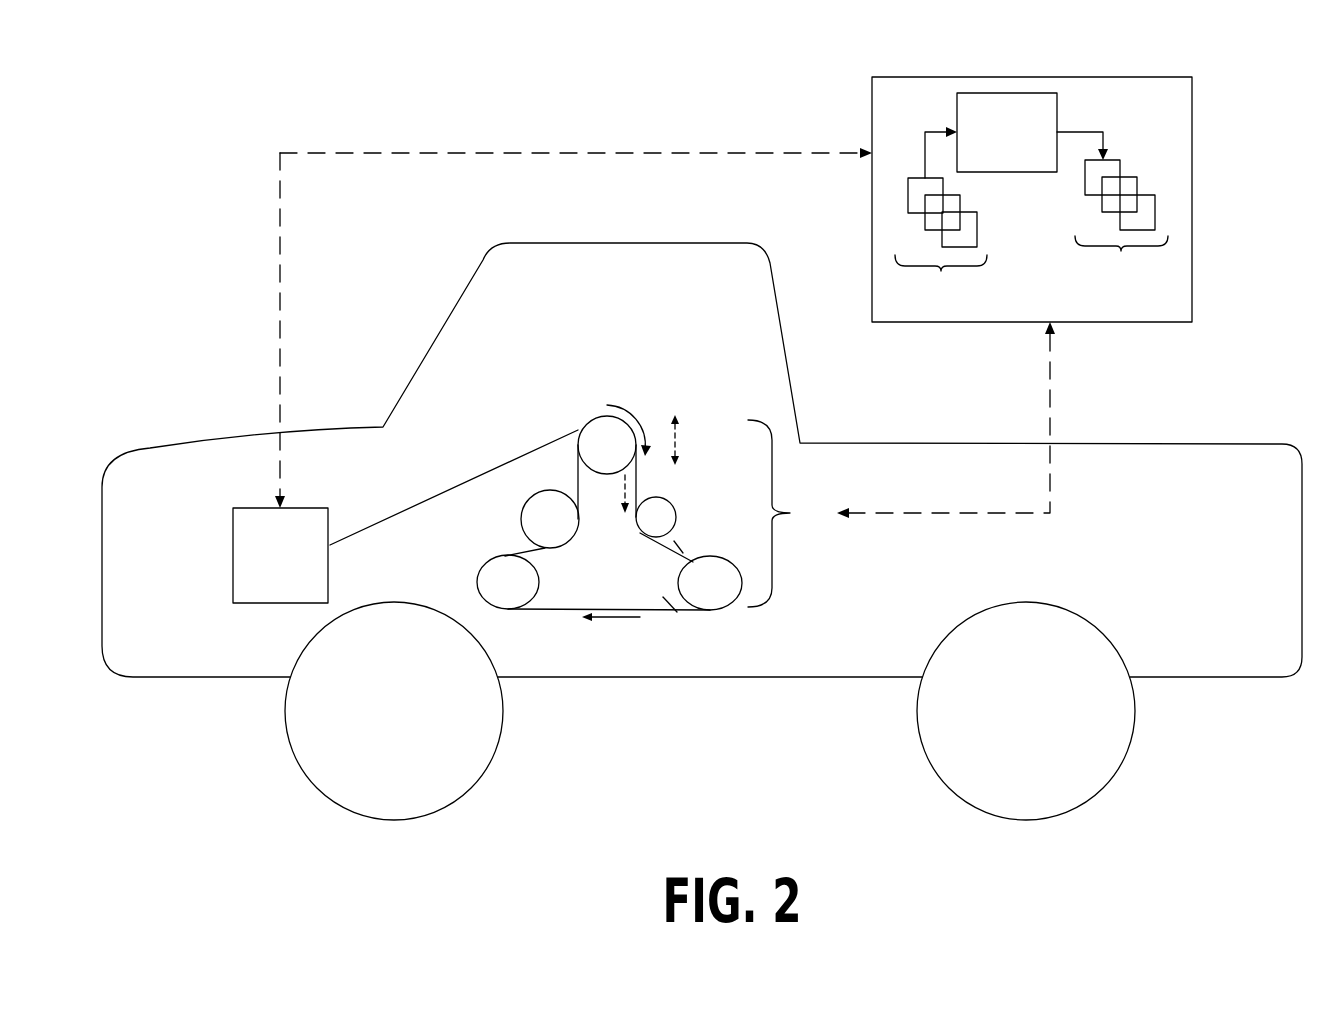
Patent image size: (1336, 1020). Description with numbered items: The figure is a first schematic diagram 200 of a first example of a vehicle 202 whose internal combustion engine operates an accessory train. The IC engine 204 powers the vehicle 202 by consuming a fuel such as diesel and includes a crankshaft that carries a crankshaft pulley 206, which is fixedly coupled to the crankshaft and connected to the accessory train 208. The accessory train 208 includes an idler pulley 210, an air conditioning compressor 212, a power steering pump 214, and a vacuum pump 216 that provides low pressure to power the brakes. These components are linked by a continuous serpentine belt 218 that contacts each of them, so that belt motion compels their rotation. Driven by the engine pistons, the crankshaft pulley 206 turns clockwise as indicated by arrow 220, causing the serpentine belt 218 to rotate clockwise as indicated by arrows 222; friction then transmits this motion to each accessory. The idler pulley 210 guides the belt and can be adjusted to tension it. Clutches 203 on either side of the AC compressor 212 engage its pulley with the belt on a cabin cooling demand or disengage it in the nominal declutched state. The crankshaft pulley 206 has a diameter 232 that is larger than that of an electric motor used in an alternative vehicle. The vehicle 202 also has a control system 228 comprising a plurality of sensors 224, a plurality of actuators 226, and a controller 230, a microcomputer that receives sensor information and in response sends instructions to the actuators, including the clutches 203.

The first schematic diagram 200 is at (271, 72).
The vehicle 202 is at (424, 208).
The clutches 203 is at (678, 548).
The IC engine 204 is at (265, 566).
The crankshaft pulley 206 is at (590, 458).
The accessory train 208 is at (788, 513).
The idler pulley 210 is at (657, 498).
The air conditioning compressor 212 is at (693, 594).
The power steering pump 214 is at (492, 593).
The vacuum pump 216 is at (534, 531).
The serpentine belt 218 is at (578, 476).
The arrow 220 is at (627, 408).
The arrows 222 is at (622, 490).
The plurality of sensors 224 is at (941, 248).
The plurality of actuators 226 is at (1121, 230).
The control system 228 is at (928, 75).
The controller 230 is at (990, 146).
The diameter 232 is at (677, 432).